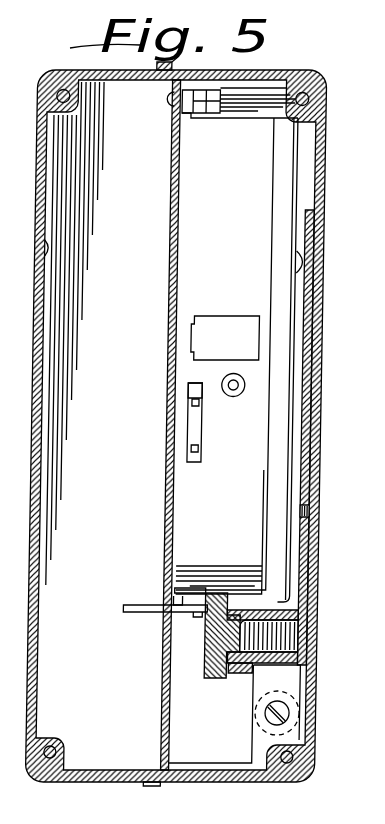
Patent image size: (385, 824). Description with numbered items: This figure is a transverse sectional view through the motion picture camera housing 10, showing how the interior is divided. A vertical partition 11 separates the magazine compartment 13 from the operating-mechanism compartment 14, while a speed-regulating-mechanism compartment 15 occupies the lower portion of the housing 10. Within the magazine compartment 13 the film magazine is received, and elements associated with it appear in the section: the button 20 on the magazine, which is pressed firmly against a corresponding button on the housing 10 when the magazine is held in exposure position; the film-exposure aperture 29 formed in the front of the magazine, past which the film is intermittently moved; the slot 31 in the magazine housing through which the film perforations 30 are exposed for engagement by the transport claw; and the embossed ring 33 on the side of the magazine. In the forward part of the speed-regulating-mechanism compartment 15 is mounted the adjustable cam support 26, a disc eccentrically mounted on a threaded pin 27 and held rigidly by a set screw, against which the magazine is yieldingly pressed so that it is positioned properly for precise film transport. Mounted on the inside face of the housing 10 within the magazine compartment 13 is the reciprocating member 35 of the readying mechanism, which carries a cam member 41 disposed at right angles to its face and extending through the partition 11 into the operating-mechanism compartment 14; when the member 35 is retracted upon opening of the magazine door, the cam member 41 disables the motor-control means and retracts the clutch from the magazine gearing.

The housing 10 is at (319, 396).
The vertical partition 11 is at (173, 479).
The magazine compartment 13 is at (312, 562).
The operating-mechanism compartment 14 is at (112, 456).
The speed-regulating-mechanism compartment 15 is at (236, 744).
The button 20 is at (239, 397).
The adjustable cam support 26 is at (221, 680).
The threaded pin 27 is at (296, 648).
The film-exposure aperture 29 is at (216, 320).
The perforations 30 is at (194, 397).
The slot 31 is at (195, 422).
The ring 33 is at (306, 262).
The member 35 is at (301, 589).
The cam member 41 is at (148, 614).